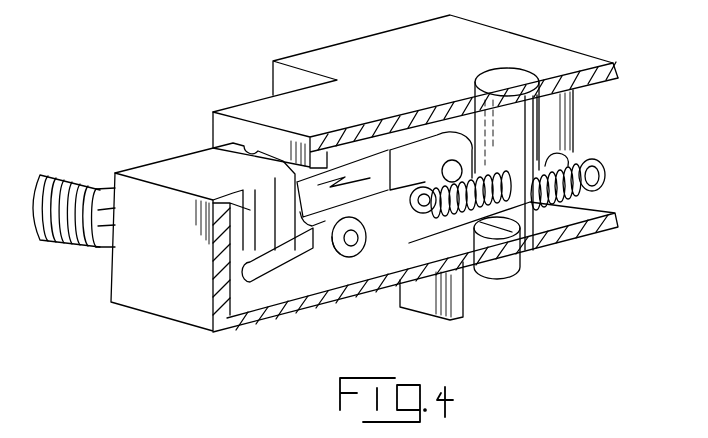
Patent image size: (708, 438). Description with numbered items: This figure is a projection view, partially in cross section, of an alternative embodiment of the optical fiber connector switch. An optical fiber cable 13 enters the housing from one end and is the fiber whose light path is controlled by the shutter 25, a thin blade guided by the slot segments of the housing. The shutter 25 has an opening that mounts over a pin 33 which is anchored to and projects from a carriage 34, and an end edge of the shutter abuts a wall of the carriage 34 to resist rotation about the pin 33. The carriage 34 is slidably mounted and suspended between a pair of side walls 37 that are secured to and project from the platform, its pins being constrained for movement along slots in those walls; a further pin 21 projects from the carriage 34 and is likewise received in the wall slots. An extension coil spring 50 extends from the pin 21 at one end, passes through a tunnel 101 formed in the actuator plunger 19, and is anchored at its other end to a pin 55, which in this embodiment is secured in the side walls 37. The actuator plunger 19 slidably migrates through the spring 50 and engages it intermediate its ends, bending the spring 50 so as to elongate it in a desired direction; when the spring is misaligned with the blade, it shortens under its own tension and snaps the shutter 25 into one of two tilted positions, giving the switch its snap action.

The optical fiber cable 13 is at (87, 187).
The actuator plunger 19 is at (517, 78).
The pin 21 is at (387, 193).
The shutter 25 is at (322, 272).
The pin 33 is at (355, 246).
The carriage 34 is at (407, 222).
The side walls 37 is at (568, 110).
The extension coil spring 50 is at (563, 157).
The pin 55 is at (600, 178).
The tunnel 101 is at (533, 245).